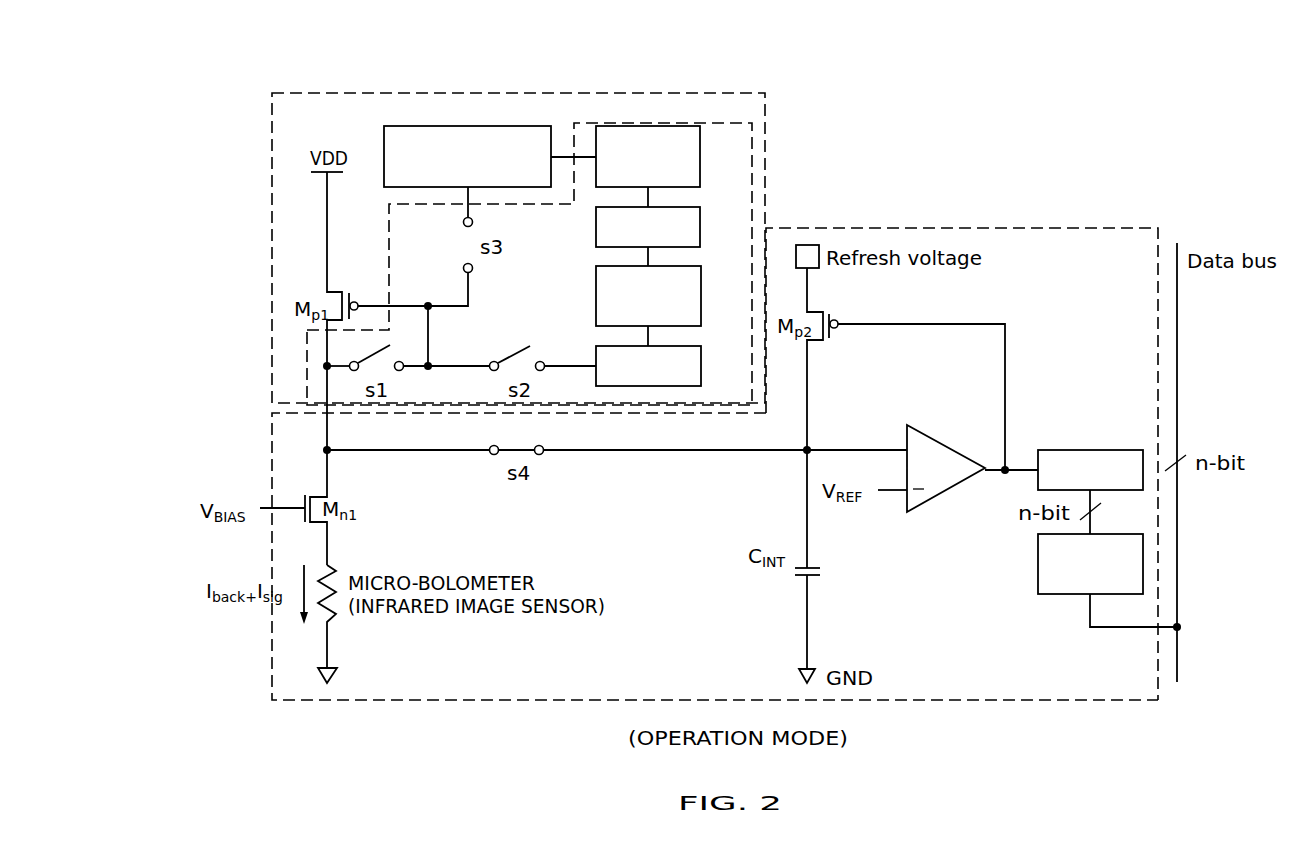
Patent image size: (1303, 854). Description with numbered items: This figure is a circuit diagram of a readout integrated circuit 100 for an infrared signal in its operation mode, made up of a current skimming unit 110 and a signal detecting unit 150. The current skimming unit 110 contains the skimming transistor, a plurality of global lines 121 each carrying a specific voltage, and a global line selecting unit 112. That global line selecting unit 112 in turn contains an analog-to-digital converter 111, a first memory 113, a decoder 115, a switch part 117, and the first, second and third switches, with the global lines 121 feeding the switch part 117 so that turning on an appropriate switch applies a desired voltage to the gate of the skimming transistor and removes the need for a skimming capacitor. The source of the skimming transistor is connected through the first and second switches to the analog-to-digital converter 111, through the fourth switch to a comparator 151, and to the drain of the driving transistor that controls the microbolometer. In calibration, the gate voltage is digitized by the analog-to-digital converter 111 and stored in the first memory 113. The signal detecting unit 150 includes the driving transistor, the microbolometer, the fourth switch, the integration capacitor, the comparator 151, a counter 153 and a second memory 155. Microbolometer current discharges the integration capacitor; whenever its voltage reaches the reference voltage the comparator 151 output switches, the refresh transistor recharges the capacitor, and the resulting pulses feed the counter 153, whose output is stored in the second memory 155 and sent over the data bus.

The readout integrated circuit 100 is at (948, 110).
The current skimming unit 110 is at (701, 94).
The analog-to-digital converter 111 is at (688, 346).
The global line selecting unit 112 is at (757, 163).
The first memory 113 is at (688, 266).
The decoder 115 is at (688, 207).
The switch part 117 is at (688, 126).
The global lines 121 is at (505, 126).
The signal detecting unit 150 is at (1110, 228).
The comparator 151 is at (946, 447).
The counter 153 is at (1098, 450).
The second memory 155 is at (1098, 534).